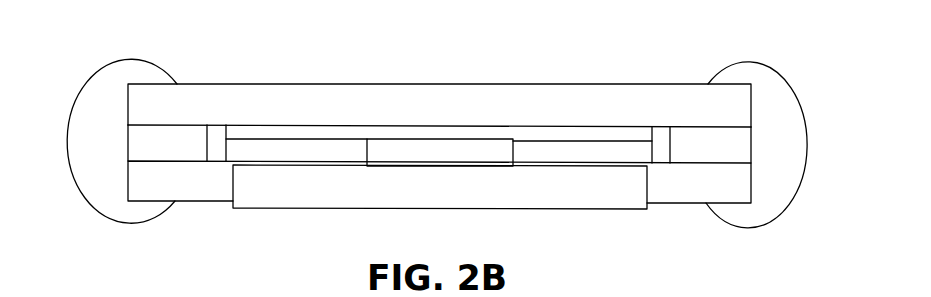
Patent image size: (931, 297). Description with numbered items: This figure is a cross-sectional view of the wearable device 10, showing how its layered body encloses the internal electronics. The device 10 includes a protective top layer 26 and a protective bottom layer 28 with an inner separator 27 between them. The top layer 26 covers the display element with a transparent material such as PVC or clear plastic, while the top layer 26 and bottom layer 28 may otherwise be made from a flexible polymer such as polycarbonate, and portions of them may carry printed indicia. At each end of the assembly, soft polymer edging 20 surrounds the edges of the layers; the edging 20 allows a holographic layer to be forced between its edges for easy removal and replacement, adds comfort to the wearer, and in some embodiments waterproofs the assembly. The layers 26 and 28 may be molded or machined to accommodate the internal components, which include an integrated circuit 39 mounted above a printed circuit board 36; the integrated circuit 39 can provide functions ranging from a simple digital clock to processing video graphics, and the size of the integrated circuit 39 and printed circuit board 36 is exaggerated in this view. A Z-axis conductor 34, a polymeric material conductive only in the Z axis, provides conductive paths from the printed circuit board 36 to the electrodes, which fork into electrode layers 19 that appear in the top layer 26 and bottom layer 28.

The device 10 is at (607, 47).
The electrode layers 19 is at (274, 133).
The polymer edging 20 is at (86, 104).
The top layer 26 is at (220, 105).
The inner separator 27 is at (698, 145).
The bottom layer 28 is at (202, 190).
The Z-axis conductor 34 is at (298, 152).
The printed circuit board 36 is at (596, 188).
The integrated circuit 39 is at (417, 152).